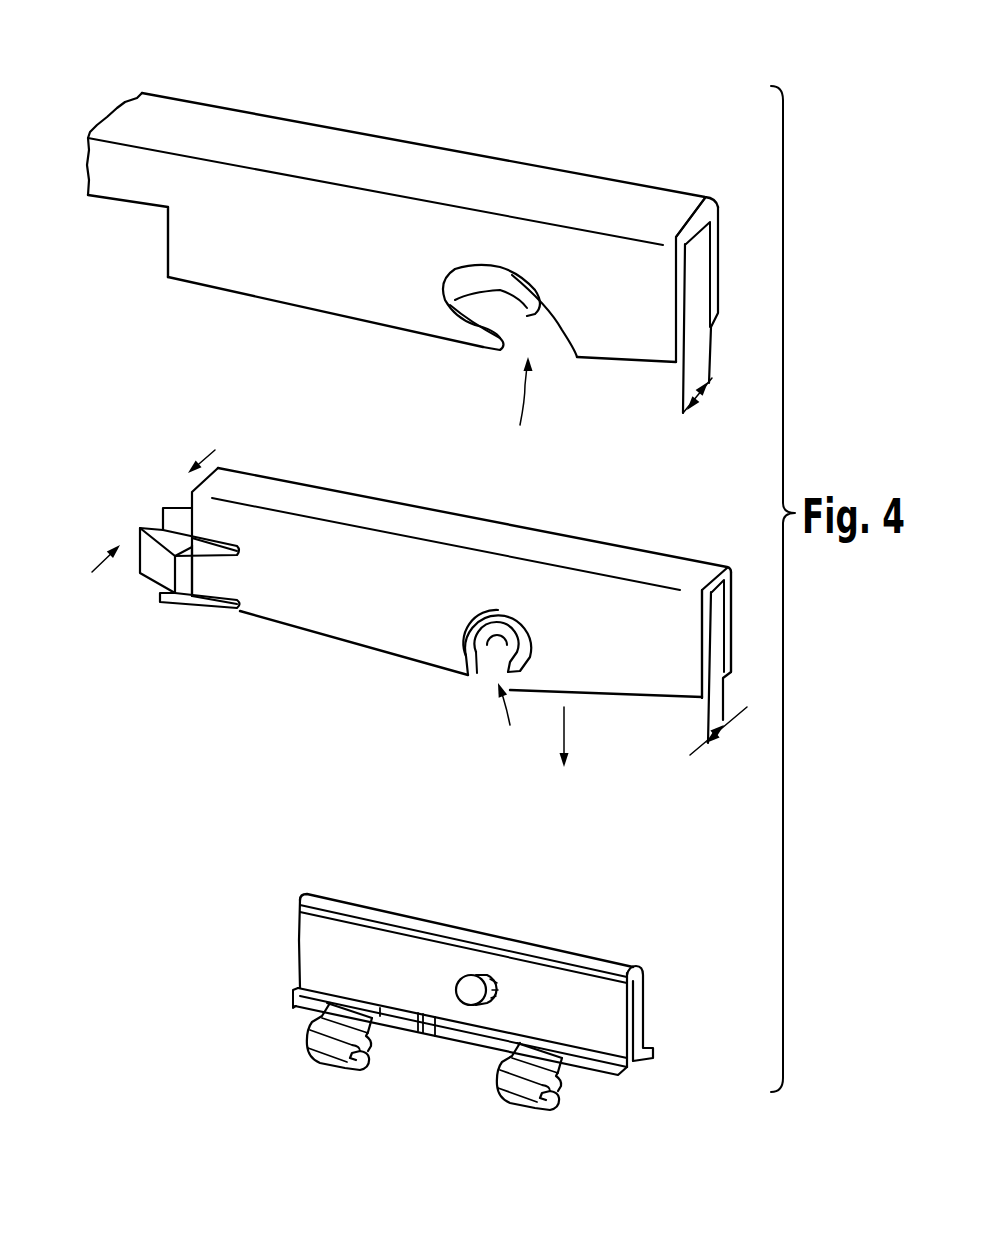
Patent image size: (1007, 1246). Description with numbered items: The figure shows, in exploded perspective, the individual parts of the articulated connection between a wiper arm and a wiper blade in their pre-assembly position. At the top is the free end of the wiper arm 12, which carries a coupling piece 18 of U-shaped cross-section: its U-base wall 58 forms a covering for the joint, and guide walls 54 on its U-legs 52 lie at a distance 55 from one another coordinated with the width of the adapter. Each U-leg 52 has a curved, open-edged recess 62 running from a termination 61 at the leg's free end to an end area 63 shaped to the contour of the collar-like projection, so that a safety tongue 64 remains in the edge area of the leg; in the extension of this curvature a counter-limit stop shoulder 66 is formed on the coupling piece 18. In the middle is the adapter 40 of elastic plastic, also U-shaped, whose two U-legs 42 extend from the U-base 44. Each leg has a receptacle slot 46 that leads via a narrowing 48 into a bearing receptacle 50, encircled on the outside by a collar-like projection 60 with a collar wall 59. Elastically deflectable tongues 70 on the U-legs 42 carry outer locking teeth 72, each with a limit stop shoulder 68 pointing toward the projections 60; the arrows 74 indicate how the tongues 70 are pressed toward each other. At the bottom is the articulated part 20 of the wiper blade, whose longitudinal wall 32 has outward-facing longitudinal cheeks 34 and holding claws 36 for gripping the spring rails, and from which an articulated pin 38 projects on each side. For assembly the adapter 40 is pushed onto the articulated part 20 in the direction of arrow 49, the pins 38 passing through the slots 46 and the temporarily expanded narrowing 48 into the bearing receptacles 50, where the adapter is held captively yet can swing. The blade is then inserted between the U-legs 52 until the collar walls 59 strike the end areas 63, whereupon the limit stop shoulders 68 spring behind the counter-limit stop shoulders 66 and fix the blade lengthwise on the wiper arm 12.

The wiper arm 12 is at (114, 90).
The coupling piece 18 is at (413, 134).
The articulated part 20 is at (278, 1020).
The longitudinal wall 32 is at (562, 953).
The longitudinal cheeks 34 is at (622, 1011).
The holding claws 36 is at (333, 1052).
The articulated pin 38 is at (470, 988).
The adapter 40 is at (122, 514).
The U-legs 42 is at (702, 682).
The U-base 44 is at (710, 585).
The receptacle slots 46 is at (516, 717).
The narrowing 48 is at (492, 640).
The arrow 49 is at (565, 742).
The bearing receptacles 50 is at (490, 660).
The U-legs 52 is at (715, 265).
The guide walls 54 is at (687, 307).
The distance 55 is at (699, 397).
The U-base wall 58 is at (695, 224).
The collar walls 59 is at (493, 607).
The collar-like projection 60 is at (470, 647).
The termination 61 is at (553, 340).
The recess 62 is at (517, 407).
The end area 63 is at (445, 305).
The safety tongue 64 is at (518, 307).
The counter-limit stop shoulder 66 is at (158, 236).
The limit stop shoulder 68 is at (185, 565).
The tongues 70 is at (205, 563).
The locking tooth 72 is at (173, 520).
The arrows 74 is at (195, 466).